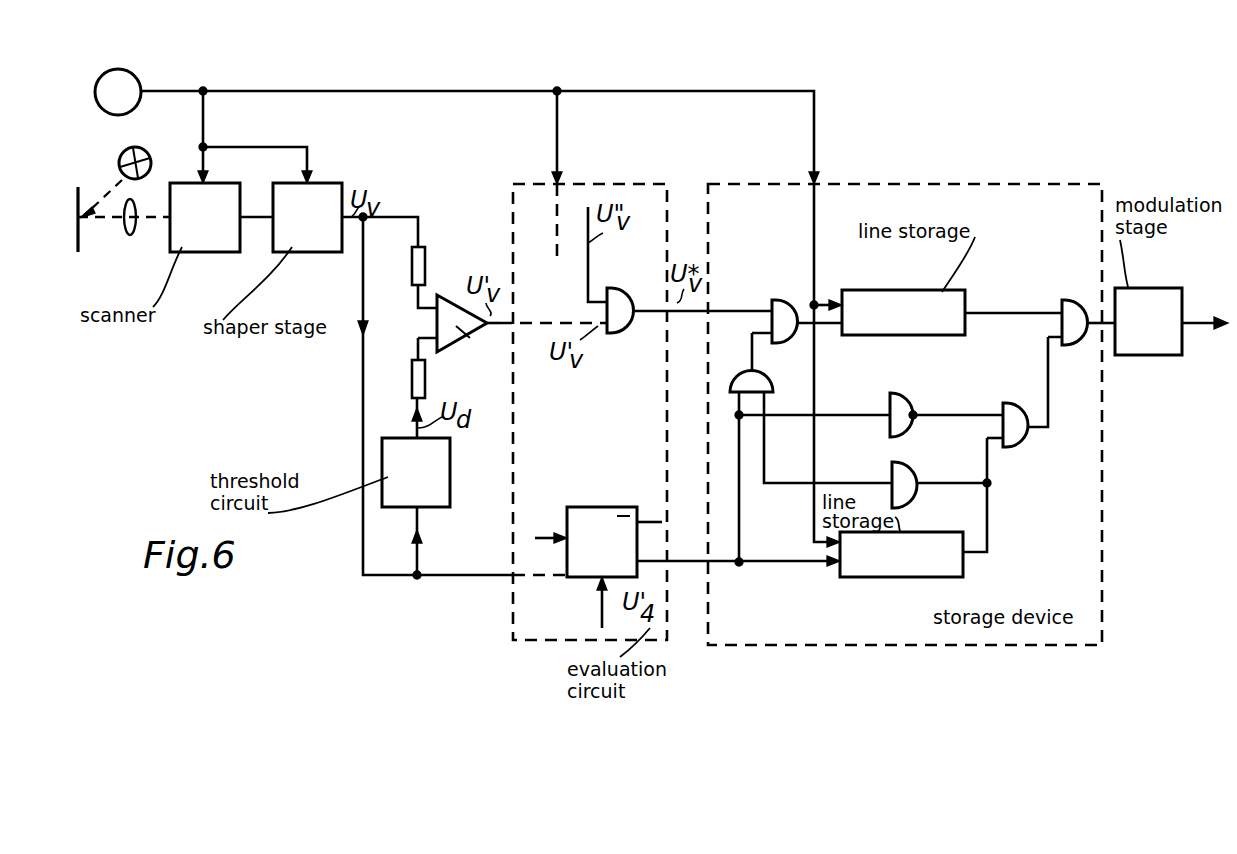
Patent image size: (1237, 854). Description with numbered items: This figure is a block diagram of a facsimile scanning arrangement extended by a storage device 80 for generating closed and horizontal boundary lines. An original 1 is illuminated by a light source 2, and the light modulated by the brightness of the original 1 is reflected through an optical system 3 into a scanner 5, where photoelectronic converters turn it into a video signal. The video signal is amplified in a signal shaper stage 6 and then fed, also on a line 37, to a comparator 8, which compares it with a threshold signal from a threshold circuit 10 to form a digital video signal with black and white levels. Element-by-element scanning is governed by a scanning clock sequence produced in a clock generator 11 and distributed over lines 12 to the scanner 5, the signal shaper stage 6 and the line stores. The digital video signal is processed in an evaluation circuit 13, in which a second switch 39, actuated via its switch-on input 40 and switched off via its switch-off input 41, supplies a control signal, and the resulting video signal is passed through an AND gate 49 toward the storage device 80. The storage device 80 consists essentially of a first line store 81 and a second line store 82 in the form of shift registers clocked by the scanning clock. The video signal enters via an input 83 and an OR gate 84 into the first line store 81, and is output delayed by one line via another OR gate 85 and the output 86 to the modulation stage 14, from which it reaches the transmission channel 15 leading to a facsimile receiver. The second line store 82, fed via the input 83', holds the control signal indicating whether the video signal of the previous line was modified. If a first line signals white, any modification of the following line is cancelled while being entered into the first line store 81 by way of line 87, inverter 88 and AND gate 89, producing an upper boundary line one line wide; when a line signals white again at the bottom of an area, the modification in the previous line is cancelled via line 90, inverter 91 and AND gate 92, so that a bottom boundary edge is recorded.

The original 1 is at (82, 234).
The light source 2 is at (118, 145).
The optical system 3 is at (131, 234).
The scanner 5 is at (197, 241).
The signal shaper stage 6 is at (300, 241).
The comparator 8 is at (466, 337).
The threshold circuit 10 is at (438, 472).
The clock generator 11 is at (142, 76).
The lines 12 is at (318, 91).
The evaluation circuit 13 is at (527, 627).
The modulation stage 14 is at (1148, 302).
The transmission channel 15 is at (1191, 327).
The line 37 is at (360, 424).
The second switch 39 is at (598, 520).
The switch-on input 40 is at (556, 530).
The switch-off input 41 is at (597, 580).
The AND gate 49 is at (628, 331).
The storage device 80 is at (1080, 580).
The first line store 81 is at (894, 306).
The second line store 82 is at (888, 566).
The input 83 is at (702, 341).
The input 83' is at (738, 588).
The OR gate 84 is at (784, 307).
The OR gate 85 is at (1068, 303).
The output 86 is at (1103, 324).
The line 87 is at (990, 522).
The inverter 88 is at (900, 472).
The AND gate 89 is at (755, 382).
The line 90 is at (846, 415).
The inverter 91 is at (905, 410).
The AND gate 92 is at (1013, 430).